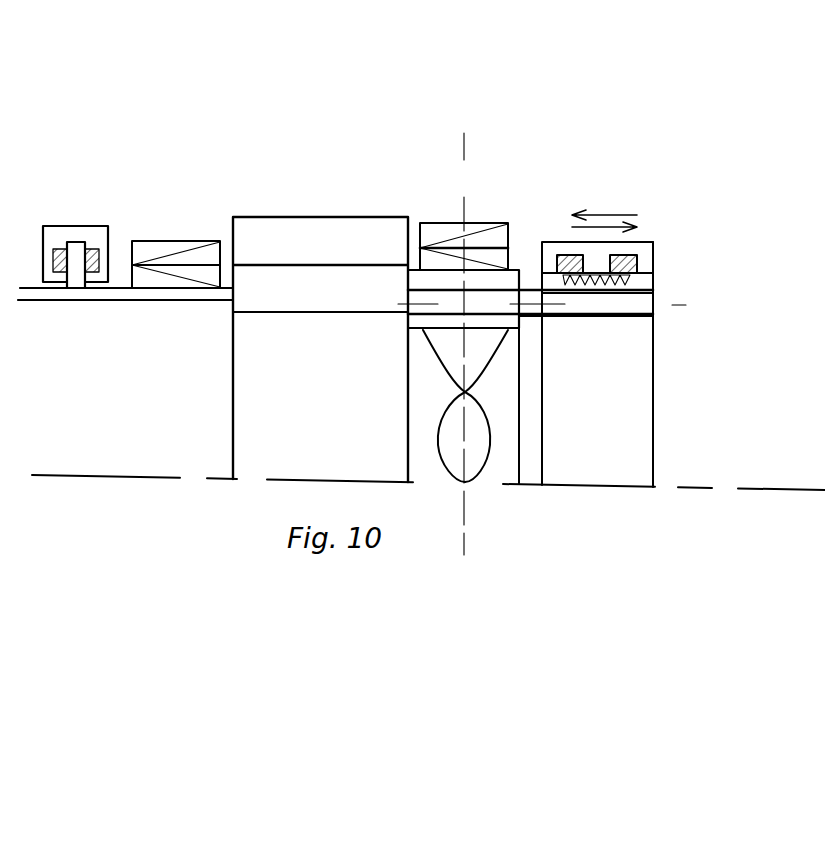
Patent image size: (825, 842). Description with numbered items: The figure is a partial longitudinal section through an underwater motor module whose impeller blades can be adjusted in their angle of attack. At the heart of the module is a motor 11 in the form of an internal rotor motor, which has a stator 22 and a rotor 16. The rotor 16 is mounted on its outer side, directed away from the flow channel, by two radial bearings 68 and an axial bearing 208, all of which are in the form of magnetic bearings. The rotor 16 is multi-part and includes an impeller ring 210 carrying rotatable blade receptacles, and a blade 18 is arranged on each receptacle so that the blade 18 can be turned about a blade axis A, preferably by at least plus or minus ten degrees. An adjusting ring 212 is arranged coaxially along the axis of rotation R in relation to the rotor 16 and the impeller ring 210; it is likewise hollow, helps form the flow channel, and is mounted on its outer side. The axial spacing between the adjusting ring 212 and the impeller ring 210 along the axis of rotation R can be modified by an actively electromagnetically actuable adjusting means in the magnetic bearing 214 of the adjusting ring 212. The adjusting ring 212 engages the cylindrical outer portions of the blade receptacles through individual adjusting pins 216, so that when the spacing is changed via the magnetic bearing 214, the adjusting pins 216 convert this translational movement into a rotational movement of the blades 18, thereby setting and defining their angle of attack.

The motor 11 is at (482, 108).
The axial bearing 208 is at (92, 238).
The radial bearings 68 is at (157, 247).
The stator 22 is at (314, 236).
The rotor 16 is at (258, 313).
The impeller ring 210 is at (512, 272).
The blades 18 is at (462, 447).
The magnetic bearing 214 is at (641, 245).
The adjusting ring 212 is at (652, 278).
The adjusting pins 216 is at (653, 320).
The blade axis A is at (467, 500).
The axis of rotation R is at (795, 492).